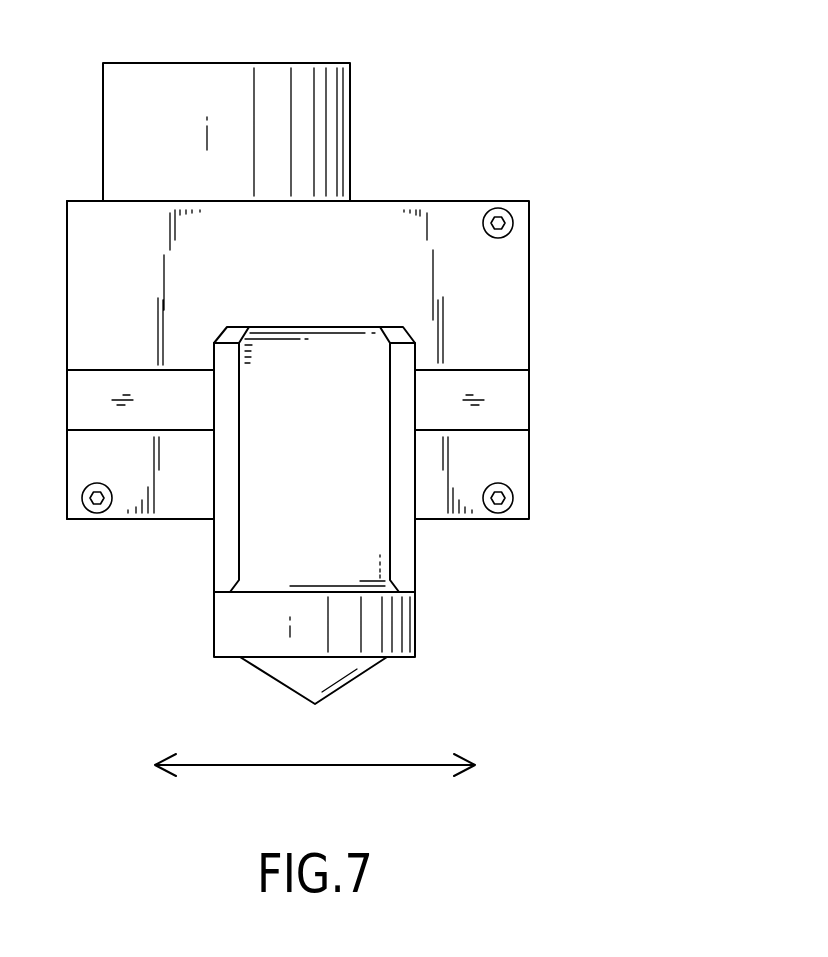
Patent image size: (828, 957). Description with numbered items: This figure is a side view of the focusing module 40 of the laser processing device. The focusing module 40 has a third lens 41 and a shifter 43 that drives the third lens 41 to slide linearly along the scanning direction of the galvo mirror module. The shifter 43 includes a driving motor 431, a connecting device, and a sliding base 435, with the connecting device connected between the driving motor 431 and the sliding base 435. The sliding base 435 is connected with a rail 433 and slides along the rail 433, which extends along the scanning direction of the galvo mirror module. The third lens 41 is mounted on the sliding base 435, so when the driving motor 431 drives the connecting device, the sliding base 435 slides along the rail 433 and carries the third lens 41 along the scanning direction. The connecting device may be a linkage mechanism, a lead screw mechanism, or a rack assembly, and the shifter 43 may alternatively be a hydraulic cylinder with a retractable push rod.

The focusing module 40 is at (600, 220).
The third lens 41 is at (357, 680).
The shifter 43 is at (360, 118).
The driving motor 431 is at (228, 78).
The rail 433 is at (512, 401).
The sliding base 435 is at (402, 553).